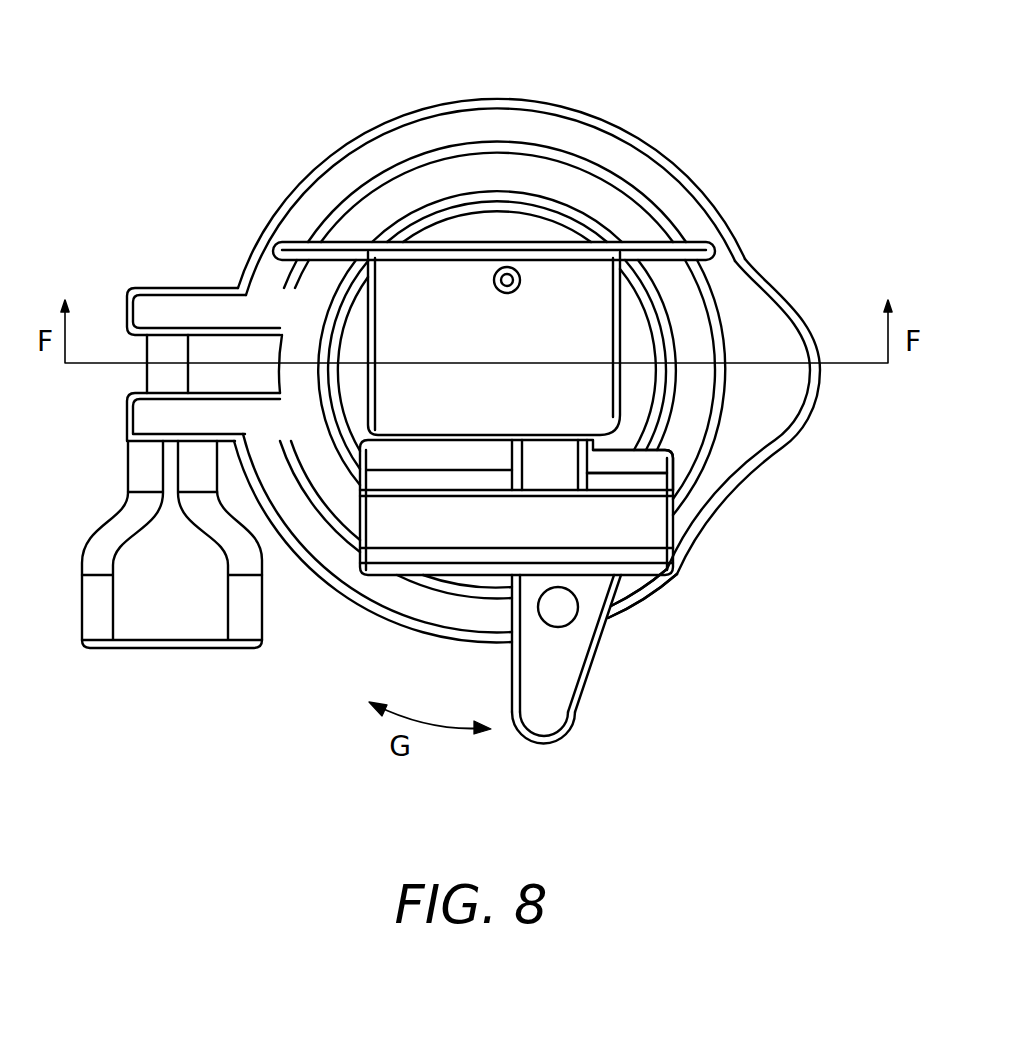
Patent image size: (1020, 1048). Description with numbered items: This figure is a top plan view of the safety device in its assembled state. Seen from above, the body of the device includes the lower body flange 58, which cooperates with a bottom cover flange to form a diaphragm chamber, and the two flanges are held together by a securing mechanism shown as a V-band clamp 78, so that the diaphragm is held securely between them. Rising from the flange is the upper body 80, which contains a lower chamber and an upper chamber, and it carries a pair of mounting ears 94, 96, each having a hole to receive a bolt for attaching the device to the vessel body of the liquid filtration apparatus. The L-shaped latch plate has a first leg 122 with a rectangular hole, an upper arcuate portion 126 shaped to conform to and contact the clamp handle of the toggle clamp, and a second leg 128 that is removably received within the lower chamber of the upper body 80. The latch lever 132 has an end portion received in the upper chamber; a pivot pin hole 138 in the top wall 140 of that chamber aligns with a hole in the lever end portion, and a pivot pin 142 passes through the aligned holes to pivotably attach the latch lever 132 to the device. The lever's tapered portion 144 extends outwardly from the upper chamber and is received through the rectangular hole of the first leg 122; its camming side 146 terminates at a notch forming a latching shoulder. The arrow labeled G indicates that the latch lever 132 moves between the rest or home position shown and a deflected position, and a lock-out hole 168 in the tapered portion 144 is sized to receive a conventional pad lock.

The lower body flange 58 is at (462, 228).
The V-band clamp 78 is at (330, 172).
The upper body 80 is at (360, 328).
The mounting ear 94 is at (277, 236).
The mounting ear 96 is at (710, 245).
The first leg 122 is at (638, 582).
The upper arcuate portion 126 is at (637, 523).
The second leg 128 is at (677, 456).
The latch lever 132 is at (563, 468).
The pivot pin hole 138 is at (509, 266).
The top wall 140 is at (543, 334).
The pivot pin 142 is at (516, 267).
The tapered portion 144 is at (557, 698).
The camming side 146 is at (608, 680).
The lock-out hole 168 is at (565, 610).